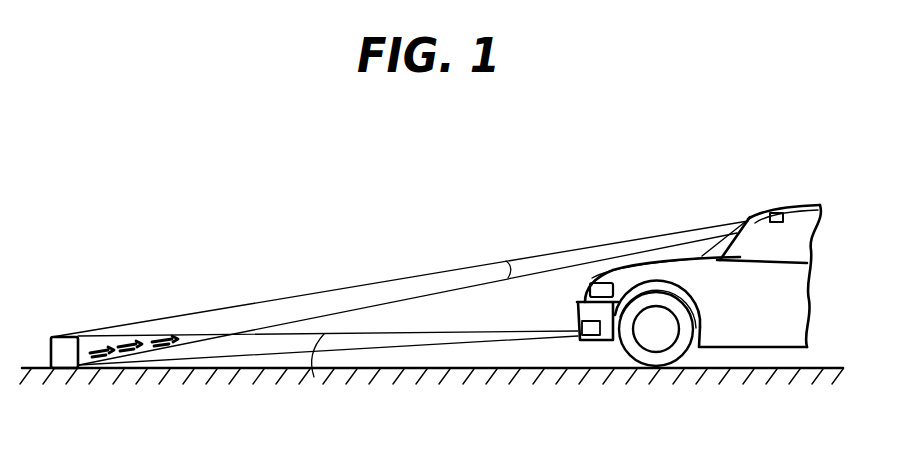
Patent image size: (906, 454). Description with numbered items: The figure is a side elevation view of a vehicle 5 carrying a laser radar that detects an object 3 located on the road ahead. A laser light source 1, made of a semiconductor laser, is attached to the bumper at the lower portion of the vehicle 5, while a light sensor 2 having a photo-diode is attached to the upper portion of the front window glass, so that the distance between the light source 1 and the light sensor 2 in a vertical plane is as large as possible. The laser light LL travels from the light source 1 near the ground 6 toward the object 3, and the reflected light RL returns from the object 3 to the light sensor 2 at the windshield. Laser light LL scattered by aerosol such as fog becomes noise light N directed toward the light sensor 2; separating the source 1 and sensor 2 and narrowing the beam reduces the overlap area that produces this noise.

The laser light source 1 is at (590, 341).
The light sensor 2 is at (781, 212).
The object 3 is at (63, 337).
The vehicle 5 is at (787, 290).
The road surface 6 is at (803, 365).
The noise light N is at (132, 346).
The reflected light RL is at (465, 267).
The laser light LL is at (450, 332).